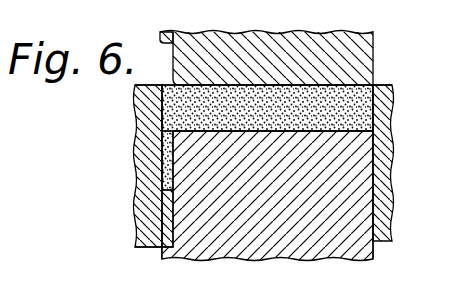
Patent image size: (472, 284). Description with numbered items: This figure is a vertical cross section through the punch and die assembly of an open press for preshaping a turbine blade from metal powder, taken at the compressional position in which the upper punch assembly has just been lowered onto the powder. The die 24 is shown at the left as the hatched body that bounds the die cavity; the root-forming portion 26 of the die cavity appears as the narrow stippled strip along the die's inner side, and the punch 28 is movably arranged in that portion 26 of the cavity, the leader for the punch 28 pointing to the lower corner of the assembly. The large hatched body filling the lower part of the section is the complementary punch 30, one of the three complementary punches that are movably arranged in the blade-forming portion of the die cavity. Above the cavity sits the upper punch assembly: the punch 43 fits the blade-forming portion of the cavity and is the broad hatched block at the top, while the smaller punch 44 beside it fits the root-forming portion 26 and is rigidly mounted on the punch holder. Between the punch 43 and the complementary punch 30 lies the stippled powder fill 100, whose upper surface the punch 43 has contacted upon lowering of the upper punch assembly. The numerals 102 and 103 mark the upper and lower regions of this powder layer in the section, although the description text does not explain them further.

The die 24 is at (141, 109).
The portion of the die cavity 26 is at (156, 142).
The punch 28 is at (161, 250).
The complementary punch 30 is at (267, 146).
The punch 43 is at (357, 68).
The punch 44 is at (170, 45).
The powder fill 100 is at (346, 107).
The adhesive layer top surface 102 is at (197, 84).
The interface layer 103 is at (202, 132).